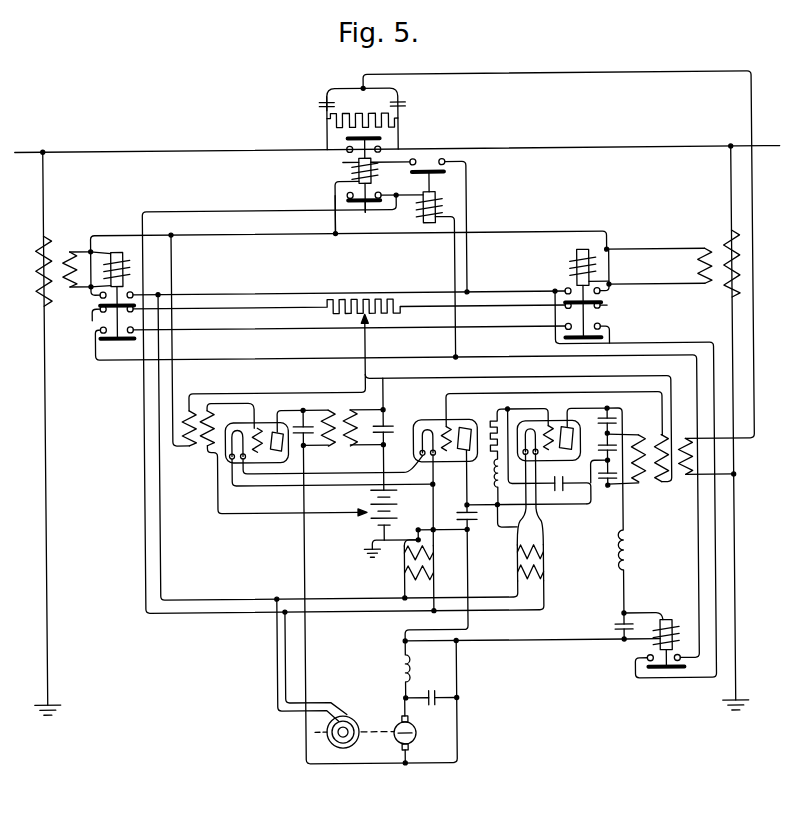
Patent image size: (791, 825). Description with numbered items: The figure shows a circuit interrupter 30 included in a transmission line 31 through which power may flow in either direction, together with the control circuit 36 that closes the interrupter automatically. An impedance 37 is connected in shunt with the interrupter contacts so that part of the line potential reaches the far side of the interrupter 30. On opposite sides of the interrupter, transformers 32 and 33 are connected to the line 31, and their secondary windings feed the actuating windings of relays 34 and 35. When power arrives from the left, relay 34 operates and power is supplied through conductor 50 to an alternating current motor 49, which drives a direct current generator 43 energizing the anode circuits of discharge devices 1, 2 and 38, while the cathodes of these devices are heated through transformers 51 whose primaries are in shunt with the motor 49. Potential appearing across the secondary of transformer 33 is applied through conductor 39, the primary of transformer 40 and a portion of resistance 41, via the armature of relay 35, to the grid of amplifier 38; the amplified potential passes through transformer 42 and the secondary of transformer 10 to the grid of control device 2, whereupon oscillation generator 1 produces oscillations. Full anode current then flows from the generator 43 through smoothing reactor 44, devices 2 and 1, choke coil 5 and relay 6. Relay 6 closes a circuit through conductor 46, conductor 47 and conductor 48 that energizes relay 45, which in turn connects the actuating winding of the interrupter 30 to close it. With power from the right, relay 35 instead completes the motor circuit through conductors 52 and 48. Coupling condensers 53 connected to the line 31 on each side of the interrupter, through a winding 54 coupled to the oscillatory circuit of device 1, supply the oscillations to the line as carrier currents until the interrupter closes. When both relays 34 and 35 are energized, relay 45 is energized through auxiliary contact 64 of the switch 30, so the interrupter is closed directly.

The discharge device 1 is at (556, 421).
The control device 2 is at (458, 421).
The choke coil 5 is at (628, 554).
The relay 6 is at (665, 621).
The transformer 10 is at (646, 488).
The circuit interrupter 30 is at (358, 163).
The transmission line 31 is at (112, 148).
The transformer 32 is at (63, 250).
The transformer 33 is at (722, 255).
The relay 34 is at (122, 256).
The relay 35 is at (578, 265).
The circuit 36 is at (586, 510).
The impedance 37 is at (368, 113).
The amplifier 38 is at (230, 452).
The conductor 39 is at (357, 236).
The transformer 40 is at (204, 447).
The resistance 41 is at (367, 298).
The transformer 42 is at (339, 412).
The direct current generator 43 is at (414, 739).
The smoothing reactor 44 is at (398, 660).
The relay 45 is at (433, 198).
The conductor 46 is at (652, 356).
The conductor 47 is at (694, 343).
The conductor 48 is at (492, 292).
The alternating current motor 49 is at (341, 744).
The conductor 50 is at (247, 209).
The cathode transformers 51 is at (430, 565).
The conductor 52 is at (193, 597).
The coupling condensers 53 is at (326, 108).
The winding 54 is at (686, 440).
The auxiliary contact 64 is at (367, 210).